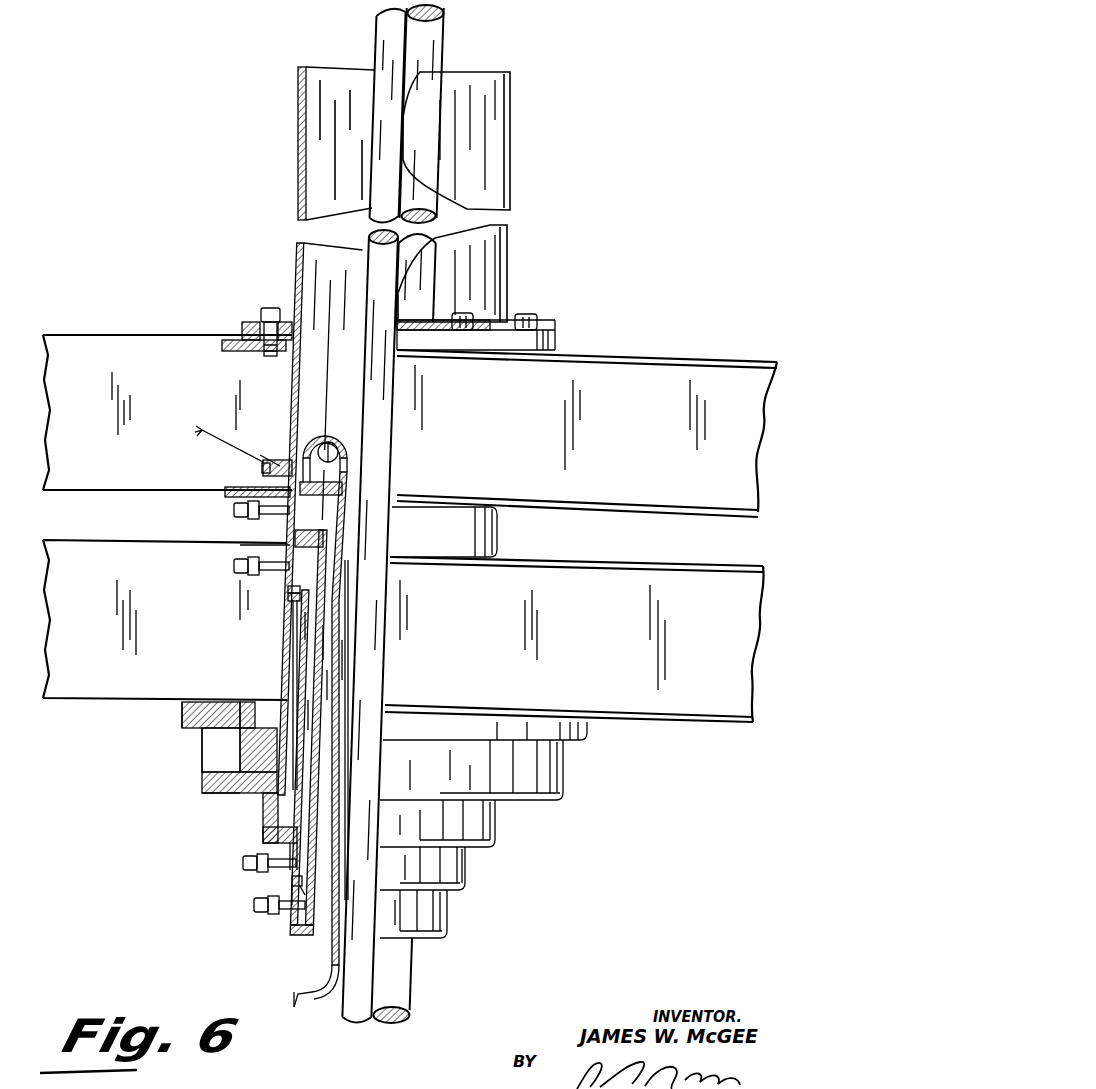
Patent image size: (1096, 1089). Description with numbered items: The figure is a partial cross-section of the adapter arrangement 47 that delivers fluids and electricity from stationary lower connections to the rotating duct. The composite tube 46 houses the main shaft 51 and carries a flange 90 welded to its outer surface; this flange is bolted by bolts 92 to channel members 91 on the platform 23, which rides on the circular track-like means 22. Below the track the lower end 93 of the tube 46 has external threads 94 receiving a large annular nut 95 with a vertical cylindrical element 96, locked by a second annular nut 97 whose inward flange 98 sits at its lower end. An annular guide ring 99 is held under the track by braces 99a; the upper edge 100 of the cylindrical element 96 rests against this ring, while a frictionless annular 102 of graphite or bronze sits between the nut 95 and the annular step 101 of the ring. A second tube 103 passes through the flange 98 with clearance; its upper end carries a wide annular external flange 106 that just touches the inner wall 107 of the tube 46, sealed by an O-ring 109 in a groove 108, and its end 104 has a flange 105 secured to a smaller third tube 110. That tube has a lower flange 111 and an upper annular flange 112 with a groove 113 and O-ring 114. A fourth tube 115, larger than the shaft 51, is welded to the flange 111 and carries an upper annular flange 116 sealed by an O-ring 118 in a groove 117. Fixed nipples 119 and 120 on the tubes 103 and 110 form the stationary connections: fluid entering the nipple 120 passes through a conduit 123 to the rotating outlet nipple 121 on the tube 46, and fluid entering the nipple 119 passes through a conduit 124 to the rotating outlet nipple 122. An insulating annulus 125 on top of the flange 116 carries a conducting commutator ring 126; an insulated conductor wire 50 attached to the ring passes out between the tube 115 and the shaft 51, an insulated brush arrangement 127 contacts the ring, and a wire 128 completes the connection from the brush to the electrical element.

The main shaft 51 is at (447, 33).
The tube 46 is at (510, 124).
The bolts 92 is at (522, 327).
The flange 90 is at (555, 331).
The platform 23 is at (645, 352).
The track-like means 22 is at (652, 558).
The adapter arrangement 47 is at (476, 864).
The channel members 91 is at (230, 348).
The inner wall 107 is at (302, 300).
The wire 128 is at (262, 462).
The insulated brush arrangement 127 is at (277, 462).
The commutator ring 126 is at (285, 440).
The annulus 125 is at (329, 442).
The annular flange 116 is at (352, 462).
The annular flange 112 is at (350, 497).
The O-ring 118 is at (265, 470).
The groove 117 is at (282, 488).
The third threaded nipple 121 is at (240, 509).
The groove 113 is at (288, 527).
The O-ring 114 is at (292, 536).
The annular external flange 106 is at (240, 549).
The fourth nipple 122 is at (238, 561).
The O-ring 109 is at (290, 589).
The groove 108 is at (293, 596).
The second tube 103 is at (307, 620).
The third tube 110 is at (328, 633).
The fourth tube 115 is at (343, 658).
The conduit 123 is at (328, 679).
The conduit 124 is at (312, 707).
The braces 99a is at (118, 632).
The upper edge 100 is at (202, 702).
The annular step 101 is at (247, 703).
The annular guide ring 99 is at (182, 705).
The vertical cylindrical element 96 is at (202, 735).
The annular 102 is at (238, 748).
The external threads 94 is at (204, 782).
The annular nut 95 is at (212, 795).
The lower end 93 is at (263, 816).
The second annular nut 97 is at (263, 831).
The flange 98 is at (297, 849).
The nipple 119 is at (243, 858).
The end 104 is at (300, 883).
The flange 105 is at (305, 893).
The second threaded nipple 120 is at (257, 908).
The flange 111 is at (320, 933).
The insulated conductor wire 50 is at (294, 1000).